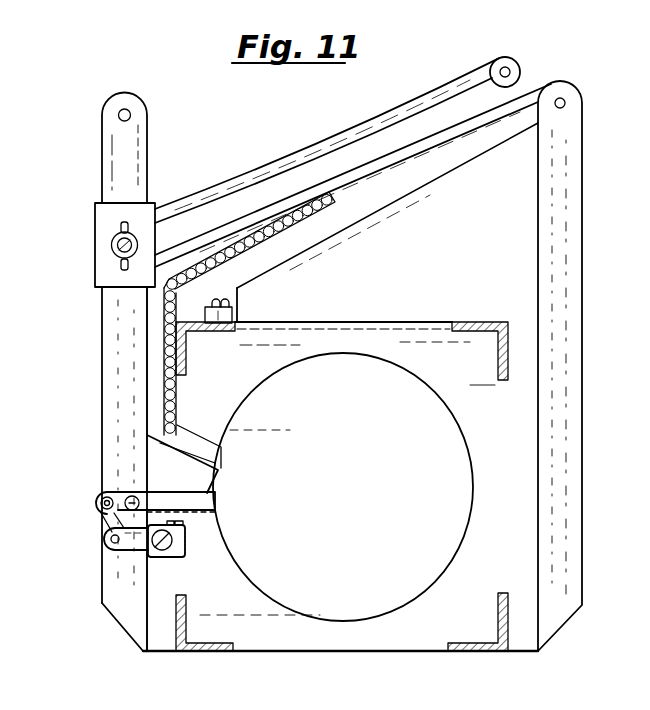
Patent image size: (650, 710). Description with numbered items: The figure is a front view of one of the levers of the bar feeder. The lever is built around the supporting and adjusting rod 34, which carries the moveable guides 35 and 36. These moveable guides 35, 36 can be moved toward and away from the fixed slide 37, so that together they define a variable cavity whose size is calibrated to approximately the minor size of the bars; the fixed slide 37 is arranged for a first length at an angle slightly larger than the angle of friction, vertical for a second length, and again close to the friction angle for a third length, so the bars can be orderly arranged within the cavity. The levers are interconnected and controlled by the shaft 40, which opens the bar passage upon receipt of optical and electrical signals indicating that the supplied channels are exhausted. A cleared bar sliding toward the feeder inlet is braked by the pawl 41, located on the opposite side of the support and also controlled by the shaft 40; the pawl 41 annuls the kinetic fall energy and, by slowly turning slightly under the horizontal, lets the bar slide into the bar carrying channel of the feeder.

The supporting and adjusting rod 34 is at (115, 147).
The moveable guide 35 is at (431, 110).
The moveable guide 36 is at (155, 383).
The fixed slide 37 is at (220, 293).
The shaft 40 is at (165, 556).
The pawl 41 is at (200, 487).